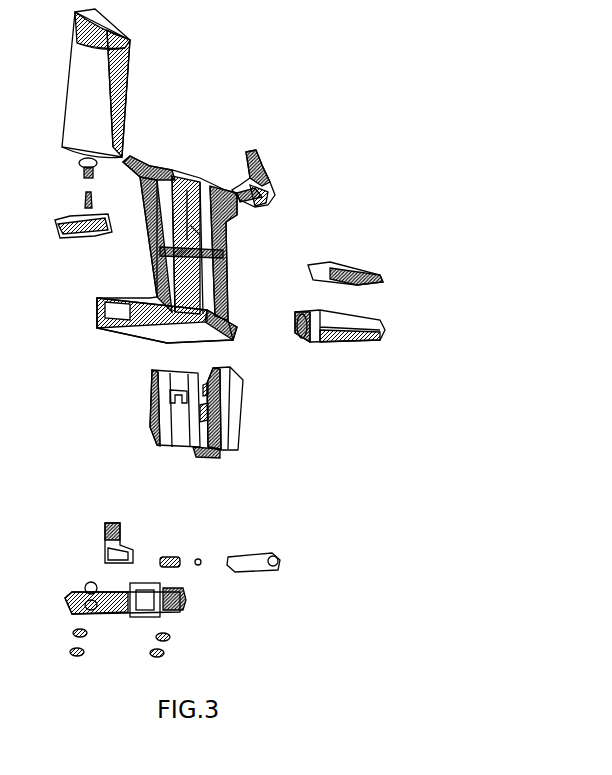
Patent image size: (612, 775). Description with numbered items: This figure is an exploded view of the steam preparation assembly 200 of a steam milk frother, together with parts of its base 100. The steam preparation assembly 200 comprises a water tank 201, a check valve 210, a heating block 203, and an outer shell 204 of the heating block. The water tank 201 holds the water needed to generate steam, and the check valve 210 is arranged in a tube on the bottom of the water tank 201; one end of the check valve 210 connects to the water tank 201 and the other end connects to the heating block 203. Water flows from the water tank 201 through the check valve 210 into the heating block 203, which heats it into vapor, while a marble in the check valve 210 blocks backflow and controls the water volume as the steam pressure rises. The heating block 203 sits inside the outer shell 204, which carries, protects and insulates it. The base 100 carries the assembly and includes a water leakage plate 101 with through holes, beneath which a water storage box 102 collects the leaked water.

The base 100 is at (265, 186).
The water leakage plate 101 is at (327, 273).
The water storage box 102 is at (313, 333).
The steam preparation assembly 200 is at (407, 637).
The water tank 201 is at (68, 100).
The heating block 203 is at (220, 445).
The outer shell of the heating block 204 is at (153, 430).
The check valve 210 is at (243, 567).